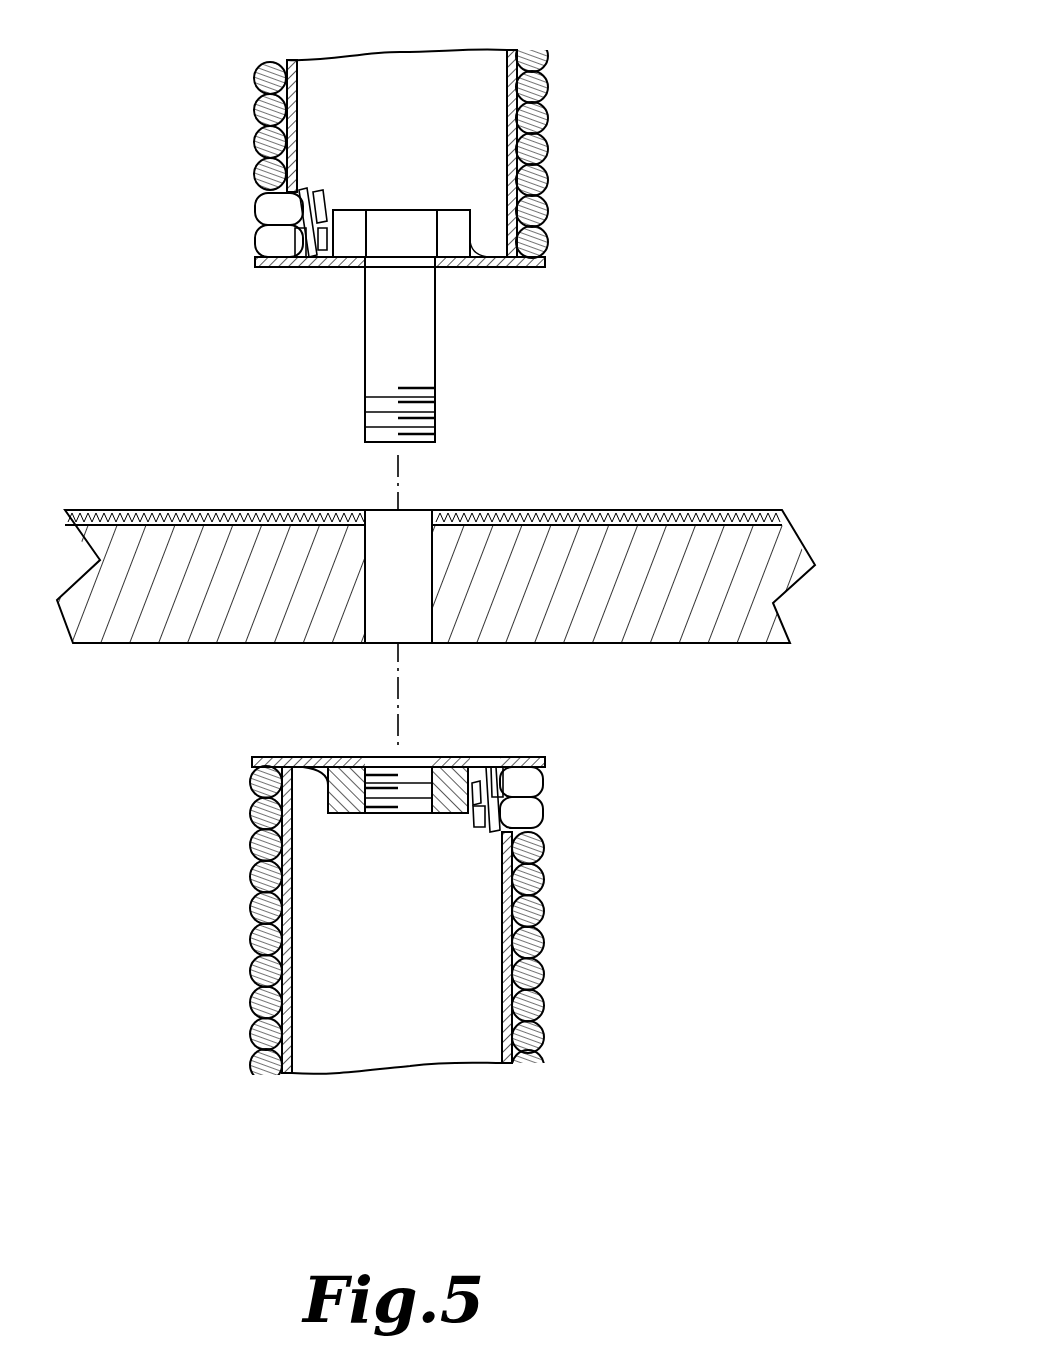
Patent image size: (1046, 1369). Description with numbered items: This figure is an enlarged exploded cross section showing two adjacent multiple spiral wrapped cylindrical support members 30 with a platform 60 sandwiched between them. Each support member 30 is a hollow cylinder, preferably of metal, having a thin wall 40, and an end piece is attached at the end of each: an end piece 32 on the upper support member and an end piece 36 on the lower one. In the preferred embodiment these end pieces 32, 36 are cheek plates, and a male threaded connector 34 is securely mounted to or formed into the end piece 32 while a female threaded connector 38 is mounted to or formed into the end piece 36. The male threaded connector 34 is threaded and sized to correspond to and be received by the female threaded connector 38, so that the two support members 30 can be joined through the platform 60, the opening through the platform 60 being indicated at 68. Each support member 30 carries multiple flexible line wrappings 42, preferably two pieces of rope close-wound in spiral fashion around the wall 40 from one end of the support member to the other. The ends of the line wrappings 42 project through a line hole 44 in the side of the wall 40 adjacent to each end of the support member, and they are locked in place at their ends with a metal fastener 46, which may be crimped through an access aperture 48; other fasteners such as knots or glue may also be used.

The multiple spiral wrapped cylindrical support member 30 is at (399, 565).
The end piece 32 is at (545, 263).
The male threaded connector 34 is at (420, 320).
The end piece 36 is at (545, 765).
The female threaded connector 38 is at (382, 766).
The wall 40 is at (510, 48).
The flexible line wrappings 42 is at (548, 135).
The line hole 44 is at (230, 222).
The metal fastener 46 is at (303, 267).
The access aperture 48 is at (318, 310).
The platform 60 is at (790, 530).
The hole 68 is at (413, 525).